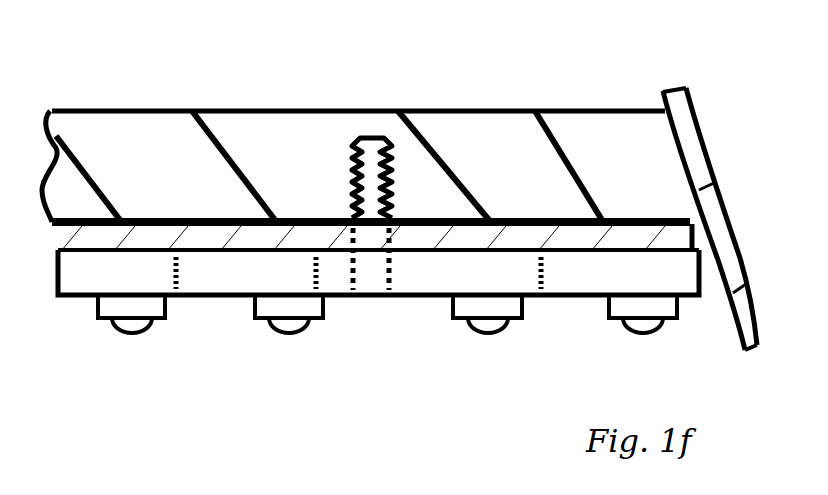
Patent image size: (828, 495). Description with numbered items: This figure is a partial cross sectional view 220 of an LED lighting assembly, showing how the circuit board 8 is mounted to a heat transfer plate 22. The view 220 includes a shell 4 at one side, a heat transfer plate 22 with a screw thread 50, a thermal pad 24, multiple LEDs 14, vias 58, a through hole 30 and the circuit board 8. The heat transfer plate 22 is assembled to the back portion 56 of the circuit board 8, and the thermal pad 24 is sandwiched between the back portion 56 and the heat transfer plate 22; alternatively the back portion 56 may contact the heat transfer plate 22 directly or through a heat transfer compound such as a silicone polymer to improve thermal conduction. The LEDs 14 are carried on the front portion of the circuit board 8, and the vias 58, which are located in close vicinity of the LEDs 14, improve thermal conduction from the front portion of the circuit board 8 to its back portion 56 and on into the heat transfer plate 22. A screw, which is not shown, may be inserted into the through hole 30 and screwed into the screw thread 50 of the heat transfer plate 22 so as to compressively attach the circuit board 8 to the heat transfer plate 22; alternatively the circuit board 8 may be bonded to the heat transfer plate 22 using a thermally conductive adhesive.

The heat transfer plate 22 is at (135, 140).
The screw thread 50 is at (356, 158).
The thermal pad 24 is at (532, 242).
The through hole 30 is at (373, 277).
The back portion of circuit board 56 is at (157, 250).
The vias 58 is at (178, 278).
The LEDs 14 is at (128, 333).
The shell 4 is at (699, 135).
The circuit board 8 is at (677, 277).
The partial cross sectional view 220 is at (218, 366).